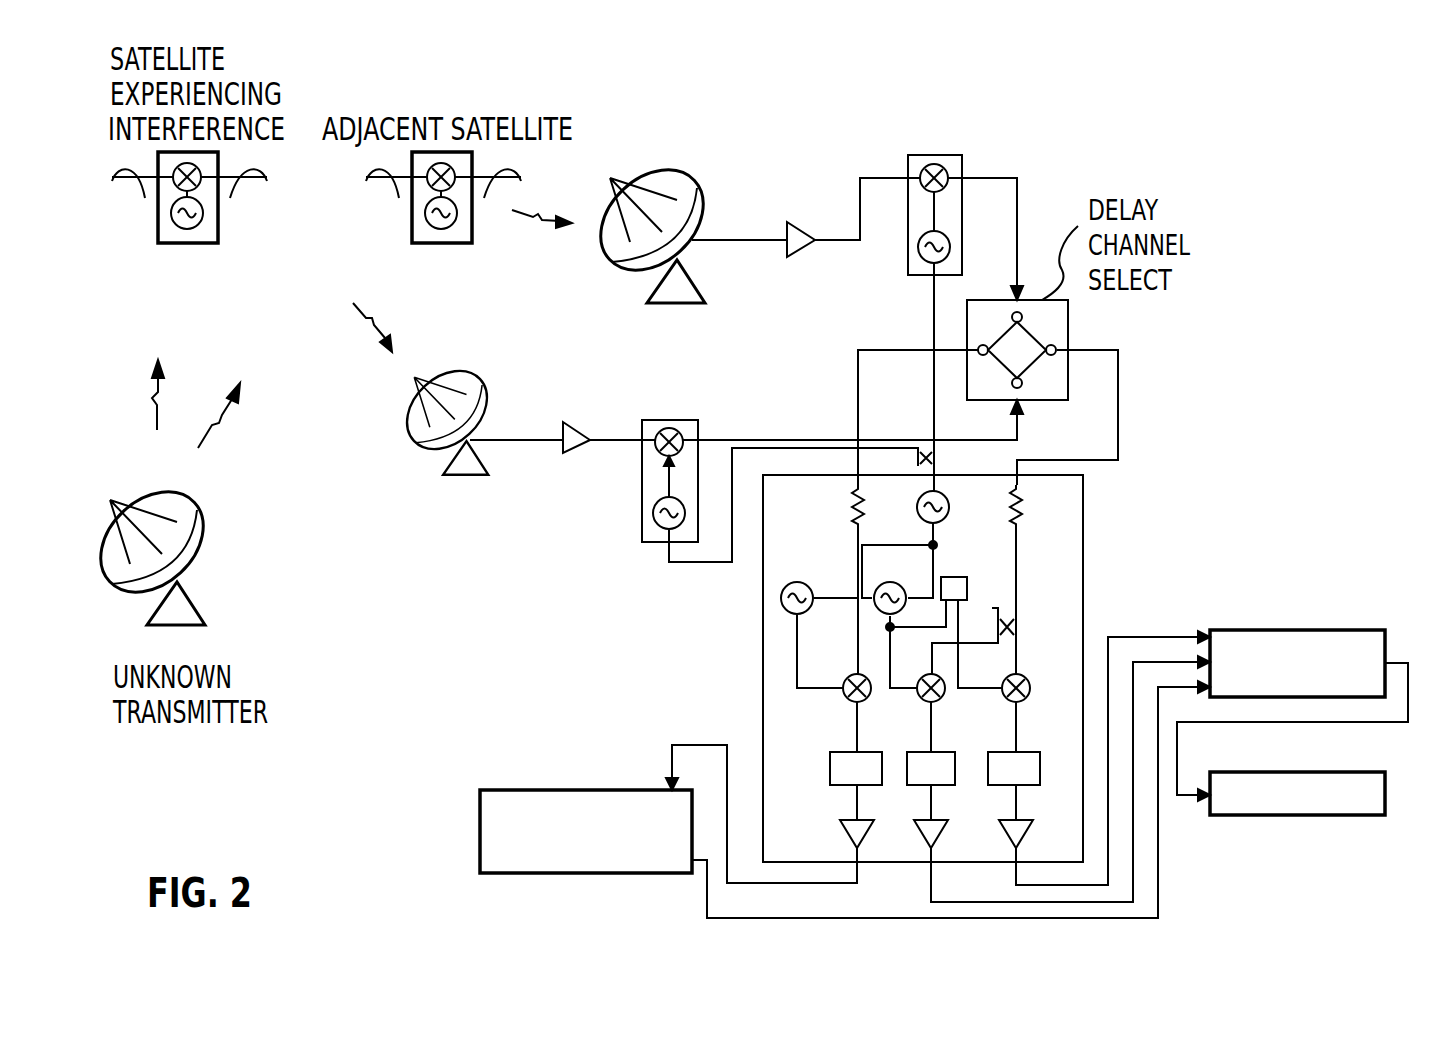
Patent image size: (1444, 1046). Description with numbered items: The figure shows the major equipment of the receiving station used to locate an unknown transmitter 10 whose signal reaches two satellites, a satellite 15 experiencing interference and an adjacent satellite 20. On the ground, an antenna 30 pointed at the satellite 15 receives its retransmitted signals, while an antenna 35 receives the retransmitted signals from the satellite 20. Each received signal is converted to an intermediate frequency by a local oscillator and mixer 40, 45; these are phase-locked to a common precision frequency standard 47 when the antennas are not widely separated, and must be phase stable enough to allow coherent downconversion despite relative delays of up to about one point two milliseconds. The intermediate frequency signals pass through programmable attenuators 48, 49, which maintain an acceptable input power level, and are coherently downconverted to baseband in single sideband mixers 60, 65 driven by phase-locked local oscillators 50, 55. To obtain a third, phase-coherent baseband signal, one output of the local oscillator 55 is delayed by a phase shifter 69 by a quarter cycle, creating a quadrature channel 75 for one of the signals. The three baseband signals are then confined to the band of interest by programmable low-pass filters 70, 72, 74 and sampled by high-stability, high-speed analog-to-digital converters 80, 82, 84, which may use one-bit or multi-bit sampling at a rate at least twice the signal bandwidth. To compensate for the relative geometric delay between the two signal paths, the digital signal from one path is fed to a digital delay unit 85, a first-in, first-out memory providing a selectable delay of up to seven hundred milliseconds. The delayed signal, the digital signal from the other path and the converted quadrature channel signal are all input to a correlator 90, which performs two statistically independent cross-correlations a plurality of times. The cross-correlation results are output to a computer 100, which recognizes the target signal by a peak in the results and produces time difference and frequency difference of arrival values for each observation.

The unknown transmitter 10 is at (200, 533).
The satellite 15 is at (197, 243).
The satellite 20 is at (452, 243).
The antenna 30 is at (437, 447).
The antenna 35 is at (685, 177).
The local oscillator and mixer 40 is at (957, 152).
The local oscillator and mixer 45 is at (645, 418).
The common precision frequency standard 47 is at (947, 500).
The programmable attenuator 48 is at (852, 504).
The programmable attenuator 49 is at (1020, 520).
The phase-locked local oscillator 50 is at (780, 600).
The phase-locked local oscillator 55 is at (878, 585).
The single sideband mixer 60 is at (847, 702).
The single sideband mixer 65 is at (924, 703).
The phase shifter 69 is at (947, 577).
The programmable filter 70 is at (1040, 758).
The programmable filter 72 is at (955, 760).
The programmable filter 74 is at (828, 768).
The quadrature channel 75 is at (1028, 678).
The analog-to-digital converter 80 is at (1023, 832).
The analog-to-digital converter 82 is at (928, 840).
The analog-to-digital converter 84 is at (845, 840).
The digital delay unit 85 is at (480, 820).
The correlator 90 is at (1323, 630).
The computer 100 is at (1330, 815).